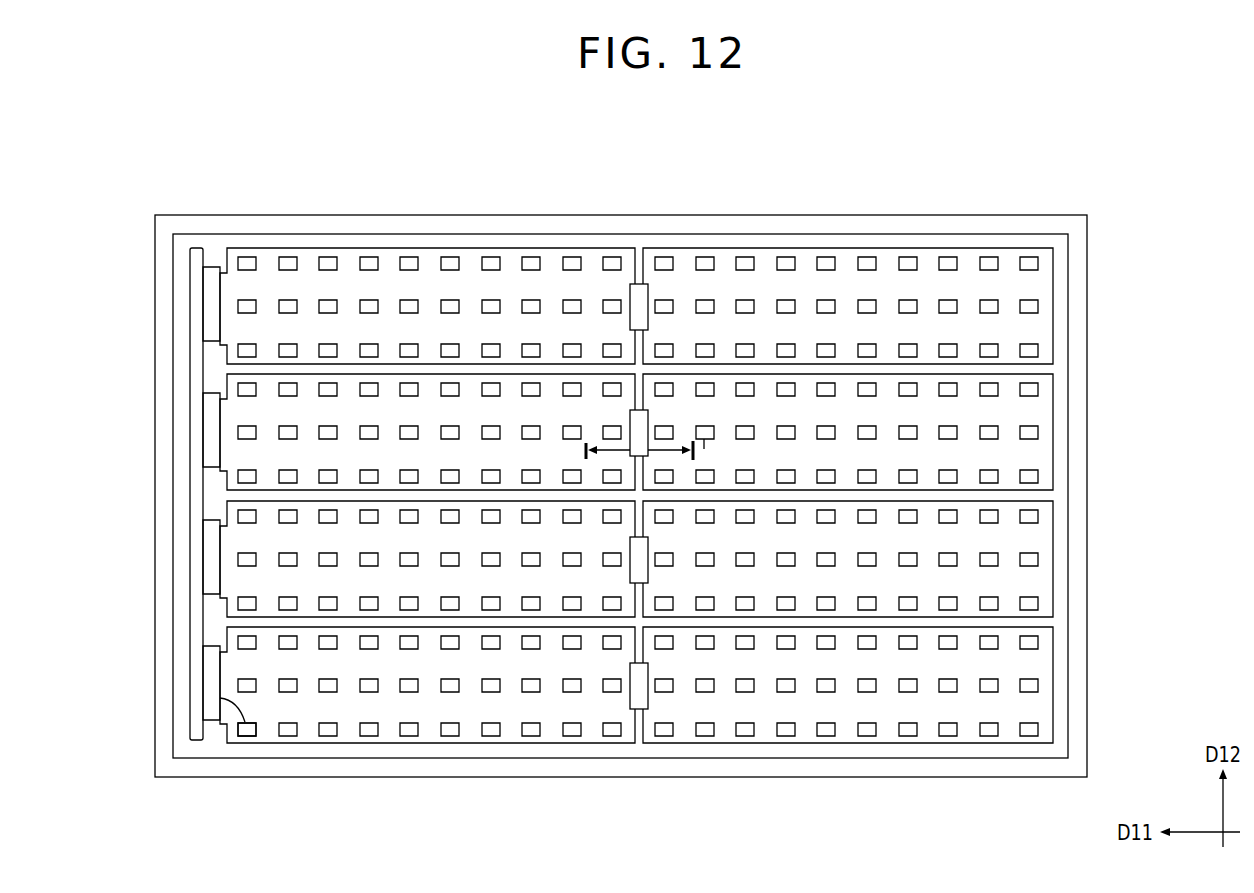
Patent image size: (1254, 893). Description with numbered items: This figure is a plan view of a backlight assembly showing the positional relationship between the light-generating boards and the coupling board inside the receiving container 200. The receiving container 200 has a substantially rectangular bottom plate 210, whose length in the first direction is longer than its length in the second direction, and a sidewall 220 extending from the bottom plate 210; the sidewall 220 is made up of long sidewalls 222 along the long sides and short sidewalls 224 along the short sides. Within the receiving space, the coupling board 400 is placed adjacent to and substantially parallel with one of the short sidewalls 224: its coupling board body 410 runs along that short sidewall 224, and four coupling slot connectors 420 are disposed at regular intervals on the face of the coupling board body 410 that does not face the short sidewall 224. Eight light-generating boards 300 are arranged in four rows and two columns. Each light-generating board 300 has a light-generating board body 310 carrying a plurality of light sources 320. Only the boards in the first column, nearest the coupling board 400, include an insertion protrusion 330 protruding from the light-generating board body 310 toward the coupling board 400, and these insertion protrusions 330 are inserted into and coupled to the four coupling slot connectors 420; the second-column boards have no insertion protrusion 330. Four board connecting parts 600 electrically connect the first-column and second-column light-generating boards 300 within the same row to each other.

The receiving container 200 is at (317, 114).
The bottom plate 210 is at (297, 240).
The sidewall 220 is at (248, 152).
The long sidewall 222 is at (232, 226).
The short sidewall 224 is at (160, 258).
The light-generating board 300 is at (385, 831).
The light-generating board body 310 is at (303, 733).
The light source 320 is at (367, 737).
The insertion protrusion 330 is at (245, 738).
The coupling board 400 is at (178, 622).
The coupling board body 410 is at (195, 483).
The coupling slot connector 420 is at (210, 558).
The board connecting part 600 is at (656, 705).